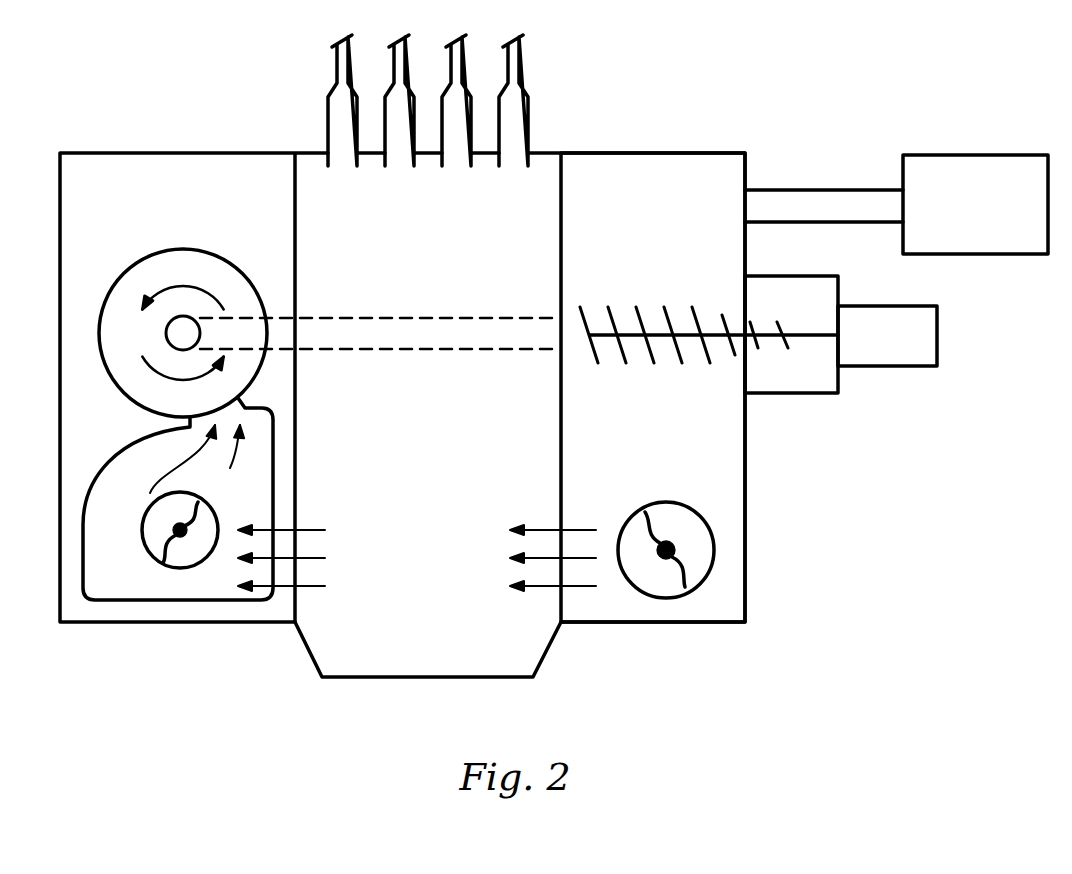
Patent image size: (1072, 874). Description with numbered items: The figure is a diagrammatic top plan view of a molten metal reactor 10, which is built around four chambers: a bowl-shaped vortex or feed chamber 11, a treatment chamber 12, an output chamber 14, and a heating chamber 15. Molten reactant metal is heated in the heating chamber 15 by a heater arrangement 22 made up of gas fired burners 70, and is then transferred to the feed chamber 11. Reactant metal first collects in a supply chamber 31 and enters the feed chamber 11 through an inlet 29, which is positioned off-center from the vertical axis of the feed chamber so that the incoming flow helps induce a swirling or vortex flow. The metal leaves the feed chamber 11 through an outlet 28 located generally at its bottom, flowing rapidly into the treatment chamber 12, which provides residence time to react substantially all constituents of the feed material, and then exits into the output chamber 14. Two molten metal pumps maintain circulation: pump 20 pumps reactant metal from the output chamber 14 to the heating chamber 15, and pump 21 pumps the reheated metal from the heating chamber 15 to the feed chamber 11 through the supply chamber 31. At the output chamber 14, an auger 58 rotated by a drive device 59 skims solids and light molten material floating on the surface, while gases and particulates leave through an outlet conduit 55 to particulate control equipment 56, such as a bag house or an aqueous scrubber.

The molten metal reactor 10 is at (72, 76).
The feed chamber 11 is at (166, 249).
The treatment chamber 12 is at (400, 318).
The output chamber 14 is at (666, 229).
The heating chamber 15 is at (440, 460).
The molten metal pump 20 is at (663, 500).
The molten metal pump 21 is at (143, 516).
The heater arrangement 22 is at (434, 188).
The outlet 28 is at (166, 329).
The inlet 29 is at (247, 404).
The supply chamber 31 is at (135, 593).
The outlet conduit 55 is at (832, 190).
The particulate control equipment 56 is at (987, 153).
The auger 58 is at (638, 322).
The drive device 59 is at (905, 306).
The gas fired burners 70 is at (337, 82).